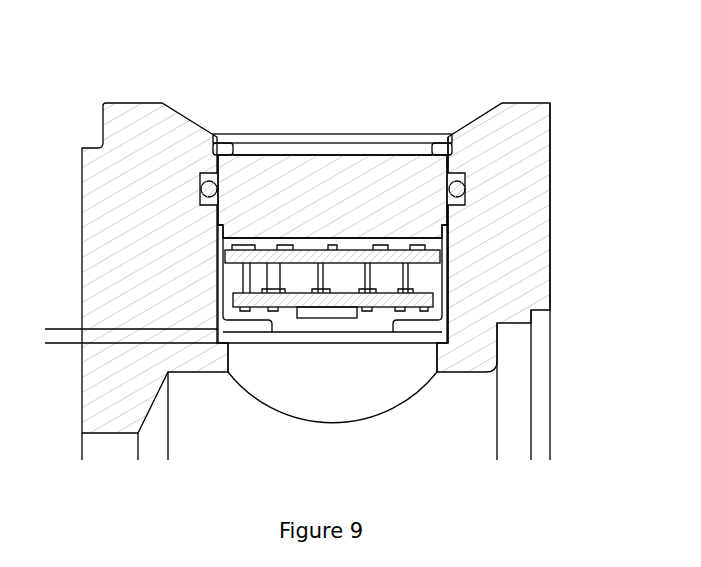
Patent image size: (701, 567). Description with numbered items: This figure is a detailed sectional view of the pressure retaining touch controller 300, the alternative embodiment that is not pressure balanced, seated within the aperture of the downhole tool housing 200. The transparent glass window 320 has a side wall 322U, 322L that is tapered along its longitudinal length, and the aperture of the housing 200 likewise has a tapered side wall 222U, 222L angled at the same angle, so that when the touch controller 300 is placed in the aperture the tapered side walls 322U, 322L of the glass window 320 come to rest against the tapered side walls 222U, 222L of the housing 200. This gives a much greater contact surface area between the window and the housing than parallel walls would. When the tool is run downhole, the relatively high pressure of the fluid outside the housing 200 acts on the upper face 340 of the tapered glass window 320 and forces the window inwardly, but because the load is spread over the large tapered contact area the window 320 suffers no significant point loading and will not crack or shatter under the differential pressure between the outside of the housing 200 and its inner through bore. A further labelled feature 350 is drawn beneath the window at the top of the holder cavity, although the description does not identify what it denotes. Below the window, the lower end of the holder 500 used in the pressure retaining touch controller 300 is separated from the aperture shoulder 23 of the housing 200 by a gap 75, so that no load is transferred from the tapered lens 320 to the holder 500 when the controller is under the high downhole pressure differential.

The housing 200 is at (350, 283).
The aperture shoulder 23 is at (440, 345).
The pressure retaining touch controller 300 is at (355, 100).
The upper tapered side wall of the aperture 222U is at (450, 162).
The lower tapered side wall of the aperture 222L is at (448, 223).
The upper face of the tapered glass window 340 is at (282, 153).
The upper tapered side wall of the glass window 322U is at (452, 168).
The lower tapered side wall of the glass window 322L is at (448, 212).
The tapered transparent glass window 320 is at (263, 178).
The cavity / potting region 350 is at (338, 238).
The holder 500 is at (442, 287).
The gap 75 is at (58, 298).